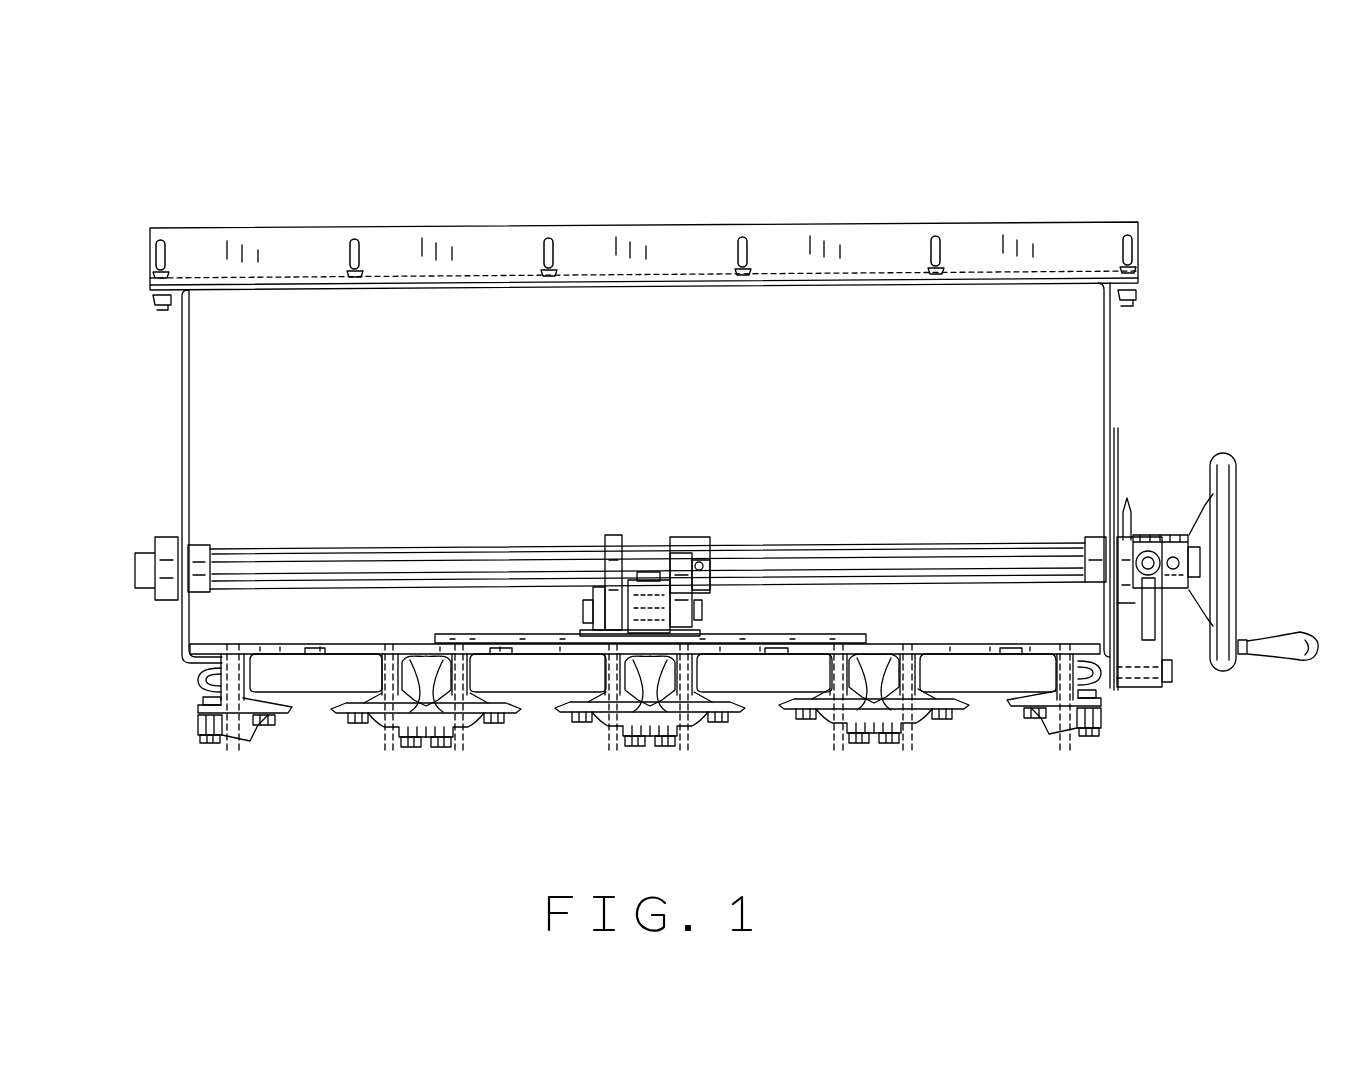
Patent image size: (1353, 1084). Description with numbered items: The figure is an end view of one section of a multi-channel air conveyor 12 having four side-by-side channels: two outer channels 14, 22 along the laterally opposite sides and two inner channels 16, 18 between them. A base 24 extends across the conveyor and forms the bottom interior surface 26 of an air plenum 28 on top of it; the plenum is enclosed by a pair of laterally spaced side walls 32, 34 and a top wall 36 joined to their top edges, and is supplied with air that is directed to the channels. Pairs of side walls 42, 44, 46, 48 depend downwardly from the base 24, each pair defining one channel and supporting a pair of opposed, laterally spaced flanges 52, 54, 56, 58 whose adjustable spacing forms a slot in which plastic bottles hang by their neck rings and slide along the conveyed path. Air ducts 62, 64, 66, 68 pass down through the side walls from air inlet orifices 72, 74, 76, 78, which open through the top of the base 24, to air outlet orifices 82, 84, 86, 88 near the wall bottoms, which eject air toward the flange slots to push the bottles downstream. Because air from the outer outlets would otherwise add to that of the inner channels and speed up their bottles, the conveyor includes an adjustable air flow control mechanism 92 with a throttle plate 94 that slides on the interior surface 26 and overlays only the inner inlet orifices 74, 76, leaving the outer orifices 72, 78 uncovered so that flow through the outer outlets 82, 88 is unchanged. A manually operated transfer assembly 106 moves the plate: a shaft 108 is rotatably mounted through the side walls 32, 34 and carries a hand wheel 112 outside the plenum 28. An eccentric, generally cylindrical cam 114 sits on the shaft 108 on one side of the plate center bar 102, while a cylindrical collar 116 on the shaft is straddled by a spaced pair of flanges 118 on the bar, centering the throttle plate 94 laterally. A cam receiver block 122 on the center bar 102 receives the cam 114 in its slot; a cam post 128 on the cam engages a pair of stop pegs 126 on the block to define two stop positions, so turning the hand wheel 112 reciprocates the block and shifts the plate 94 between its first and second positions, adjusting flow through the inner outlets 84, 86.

The multi-channel air conveyor 12 is at (1042, 170).
The outer air conveyor channel 14 is at (312, 708).
The inner air conveyor channel 16 is at (536, 702).
The inner air conveyor channel 18 is at (760, 706).
The outer air conveyor channel 22 is at (988, 704).
The base 24 is at (1018, 642).
The bottom interior surface 26 is at (965, 640).
The air plenum 28 is at (688, 323).
The side wall 32 is at (182, 395).
The side wall 34 is at (1112, 332).
The top wall 36 is at (648, 280).
The side walls 42 is at (210, 700).
The side walls 44 is at (427, 712).
The side walls 46 is at (658, 708).
The side walls 48 is at (886, 708).
The flanges 52 is at (290, 712).
The flanges 54 is at (490, 712).
The flanges 56 is at (737, 706).
The flanges 58 is at (962, 709).
The air duct 62 is at (210, 738).
The air duct 64 is at (440, 738).
The air duct 66 is at (672, 738).
The air duct 68 is at (890, 738).
The air inlet orifice 72 is at (230, 652).
The air inlet orifice 74 is at (468, 652).
The air inlet orifice 76 is at (688, 652).
The air inlet orifice 78 is at (906, 652).
The air outlet orifice 82 is at (263, 742).
The air outlet orifice 84 is at (472, 742).
The air outlet orifice 86 is at (706, 740).
The air outlet orifice 88 is at (940, 735).
The adjustable air flow control mechanism 92 is at (720, 600).
The throttle plate 94 is at (797, 635).
The plate center bar 102 is at (640, 548).
The transfer assembly 106 is at (750, 527).
The shaft 108 is at (398, 568).
The hand wheel 112 is at (1230, 452).
The cam 114 is at (688, 548).
The collar 116 is at (612, 535).
The flanges 118 is at (626, 548).
The cam receiver block 122 is at (664, 548).
The stop pegs 126 is at (728, 560).
The cam post 128 is at (708, 548).